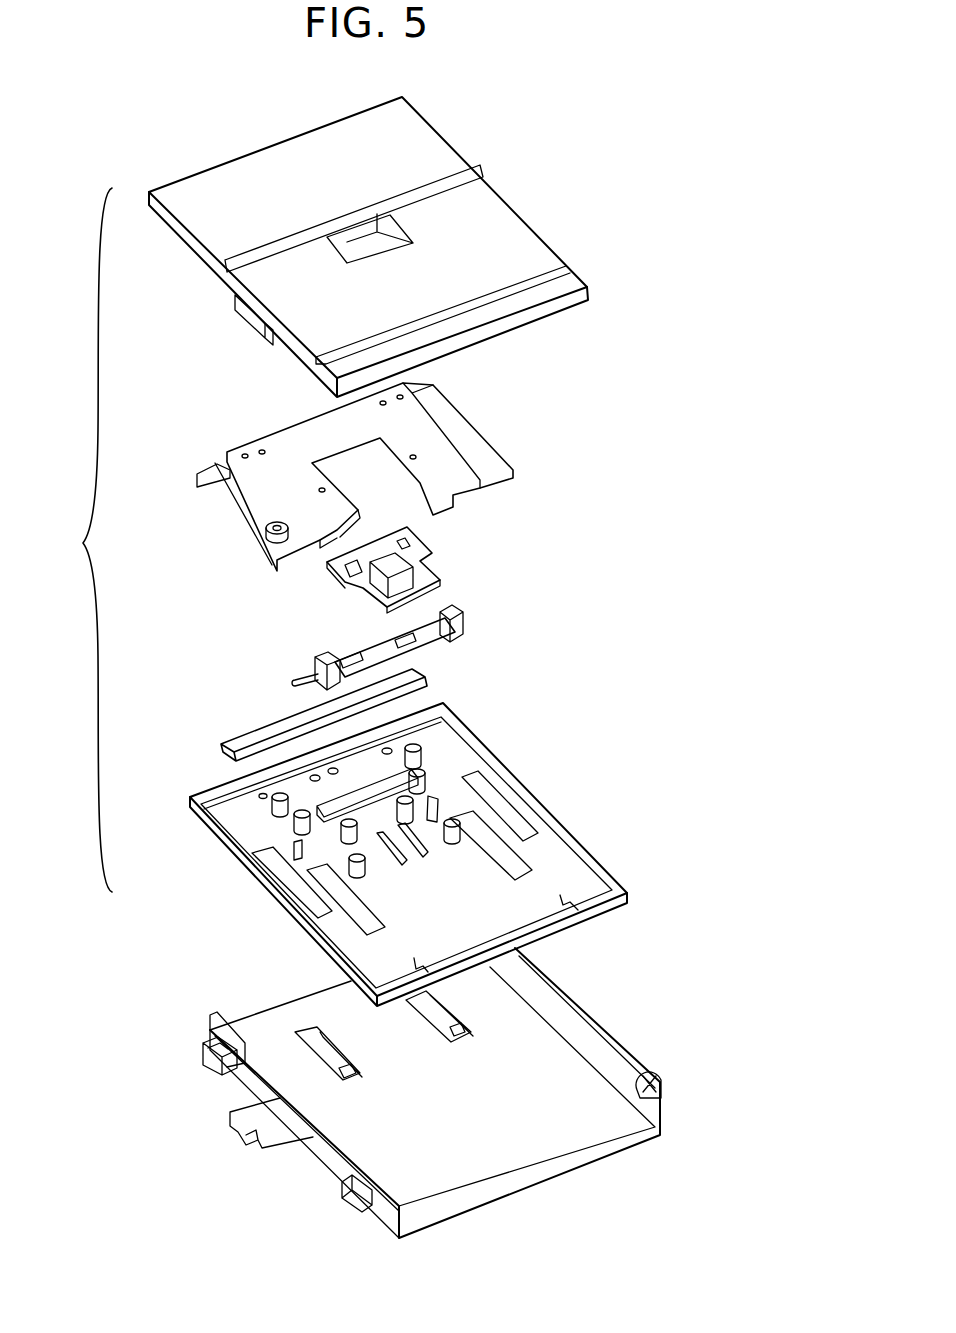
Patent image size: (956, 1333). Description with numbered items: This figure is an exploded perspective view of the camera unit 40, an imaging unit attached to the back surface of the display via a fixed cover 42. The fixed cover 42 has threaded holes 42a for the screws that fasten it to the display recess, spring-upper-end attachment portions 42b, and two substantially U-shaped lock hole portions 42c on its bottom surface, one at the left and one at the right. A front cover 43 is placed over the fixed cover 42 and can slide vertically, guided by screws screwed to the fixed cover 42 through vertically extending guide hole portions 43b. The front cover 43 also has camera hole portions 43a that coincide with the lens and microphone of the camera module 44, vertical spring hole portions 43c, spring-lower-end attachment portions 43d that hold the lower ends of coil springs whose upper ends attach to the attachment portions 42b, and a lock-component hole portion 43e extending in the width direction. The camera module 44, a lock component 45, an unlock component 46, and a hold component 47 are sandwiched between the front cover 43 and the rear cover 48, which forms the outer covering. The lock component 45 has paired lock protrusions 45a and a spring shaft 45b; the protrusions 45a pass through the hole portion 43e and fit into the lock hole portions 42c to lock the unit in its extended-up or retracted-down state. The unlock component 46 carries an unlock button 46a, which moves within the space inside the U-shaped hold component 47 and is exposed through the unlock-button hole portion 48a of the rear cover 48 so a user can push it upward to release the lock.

The camera unit 40 is at (79, 540).
The fixed cover 42 is at (208, 1060).
The threaded holes 42a is at (208, 1058).
The spring-upper-end attachment portions 42b is at (467, 1040).
The lock hole portions 42c is at (448, 1005).
The front cover 43 is at (197, 800).
The camera hole portions 43a is at (336, 769).
The guide hole portions 43b is at (530, 832).
The spring hole portions 43c is at (355, 907).
The spring-lower-end attachment portions 43d is at (563, 903).
The lock-component hole portion 43e is at (420, 772).
The camera module 44 is at (222, 745).
The lock component 45 is at (372, 653).
The lock protrusions 45a is at (333, 656).
The spring shaft 45b is at (295, 681).
The unlock component 46 is at (433, 573).
The unlock button 46a is at (397, 548).
The hold component 47 is at (205, 486).
The rear cover 48 is at (182, 230).
The unlock-button hole portion 48a is at (366, 235).